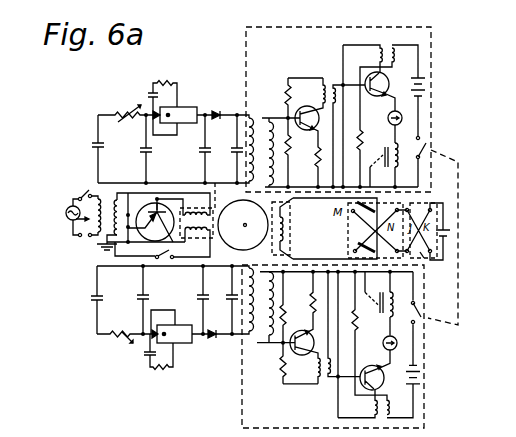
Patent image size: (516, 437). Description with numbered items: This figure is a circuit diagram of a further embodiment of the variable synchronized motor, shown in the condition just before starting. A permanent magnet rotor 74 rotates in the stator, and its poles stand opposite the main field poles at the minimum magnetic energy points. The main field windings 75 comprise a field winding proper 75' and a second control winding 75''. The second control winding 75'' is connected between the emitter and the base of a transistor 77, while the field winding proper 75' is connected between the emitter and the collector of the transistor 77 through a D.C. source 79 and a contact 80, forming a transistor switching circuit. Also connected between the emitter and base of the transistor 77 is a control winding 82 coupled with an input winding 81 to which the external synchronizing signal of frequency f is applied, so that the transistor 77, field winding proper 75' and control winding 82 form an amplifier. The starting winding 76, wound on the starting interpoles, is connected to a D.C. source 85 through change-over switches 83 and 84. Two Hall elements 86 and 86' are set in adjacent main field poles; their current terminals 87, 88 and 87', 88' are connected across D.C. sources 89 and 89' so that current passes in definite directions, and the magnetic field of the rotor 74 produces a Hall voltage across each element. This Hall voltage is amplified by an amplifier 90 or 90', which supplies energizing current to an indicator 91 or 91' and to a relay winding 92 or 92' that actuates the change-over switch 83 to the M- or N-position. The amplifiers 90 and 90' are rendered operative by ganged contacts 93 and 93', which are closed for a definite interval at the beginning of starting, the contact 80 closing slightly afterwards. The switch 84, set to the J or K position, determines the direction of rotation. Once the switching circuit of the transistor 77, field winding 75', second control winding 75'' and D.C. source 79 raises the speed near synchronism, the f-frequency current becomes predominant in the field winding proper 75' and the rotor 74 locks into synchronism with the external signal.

The permanent magnet rotor 74 is at (246, 270).
The main field windings 75 is at (233, 152).
The field winding proper 75' is at (197, 221).
The second control winding 75'' is at (189, 192).
The starting winding 76 is at (290, 218).
The transistor 77 is at (148, 237).
The D.C. source 79 is at (100, 250).
The contact 80 is at (161, 260).
The input winding 81 is at (88, 195).
The control winding 82 is at (112, 198).
The change-over switch 83 is at (360, 226).
The change-over switch 84 is at (424, 258).
The D.C. source 85 is at (455, 234).
The Hall element 86 is at (188, 102).
The Hall element 86' is at (193, 348).
The current terminal 87 is at (177, 87).
The current terminal 87' is at (181, 362).
The current terminal 88 is at (171, 138).
The current terminal 88' is at (173, 313).
The D.C. source 89 is at (149, 93).
The D.C. source 89' is at (135, 355).
The amplifier 90 is at (321, 105).
The amplifier 90' is at (311, 346).
The indicator 91 is at (383, 115).
The indicator 91' is at (376, 352).
The relay winding 92 is at (425, 167).
The relay winding 92' is at (424, 335).
The contact 93 is at (442, 140).
The contact 93' is at (441, 327).